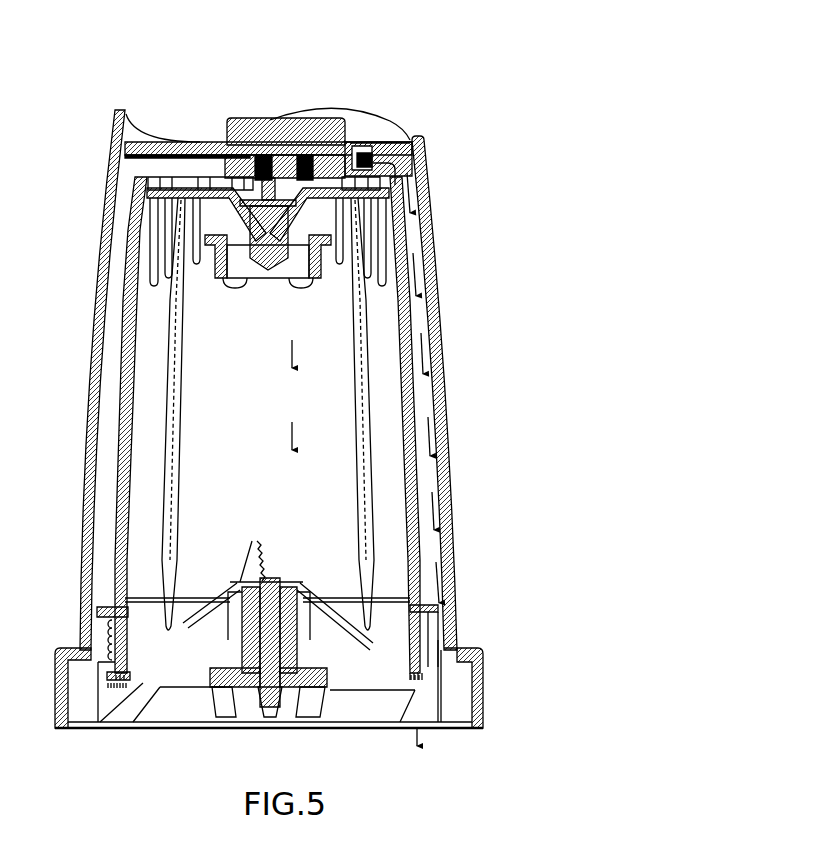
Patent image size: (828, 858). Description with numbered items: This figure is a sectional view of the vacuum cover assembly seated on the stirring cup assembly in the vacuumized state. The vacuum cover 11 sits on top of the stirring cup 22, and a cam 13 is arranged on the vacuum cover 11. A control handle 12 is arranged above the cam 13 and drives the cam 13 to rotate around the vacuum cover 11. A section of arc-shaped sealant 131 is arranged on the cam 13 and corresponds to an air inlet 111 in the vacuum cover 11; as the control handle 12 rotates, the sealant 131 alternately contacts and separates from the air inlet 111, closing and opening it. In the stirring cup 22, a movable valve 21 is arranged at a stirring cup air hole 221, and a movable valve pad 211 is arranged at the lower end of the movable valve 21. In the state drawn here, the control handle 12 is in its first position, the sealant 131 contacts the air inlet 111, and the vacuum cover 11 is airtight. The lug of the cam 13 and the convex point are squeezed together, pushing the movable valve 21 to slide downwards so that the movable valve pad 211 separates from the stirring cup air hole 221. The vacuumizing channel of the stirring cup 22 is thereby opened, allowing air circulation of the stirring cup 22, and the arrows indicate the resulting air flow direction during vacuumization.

The vacuum cover 11 is at (430, 247).
The air inlet 111 is at (357, 145).
The control handle 12 is at (322, 133).
The cam 13 is at (243, 118).
The sealant 131 is at (403, 138).
The movable valve 21 is at (247, 228).
The movable valve pad 211 is at (240, 235).
The stirring cup 22 is at (413, 387).
The stirring cup air hole 221 is at (245, 255).